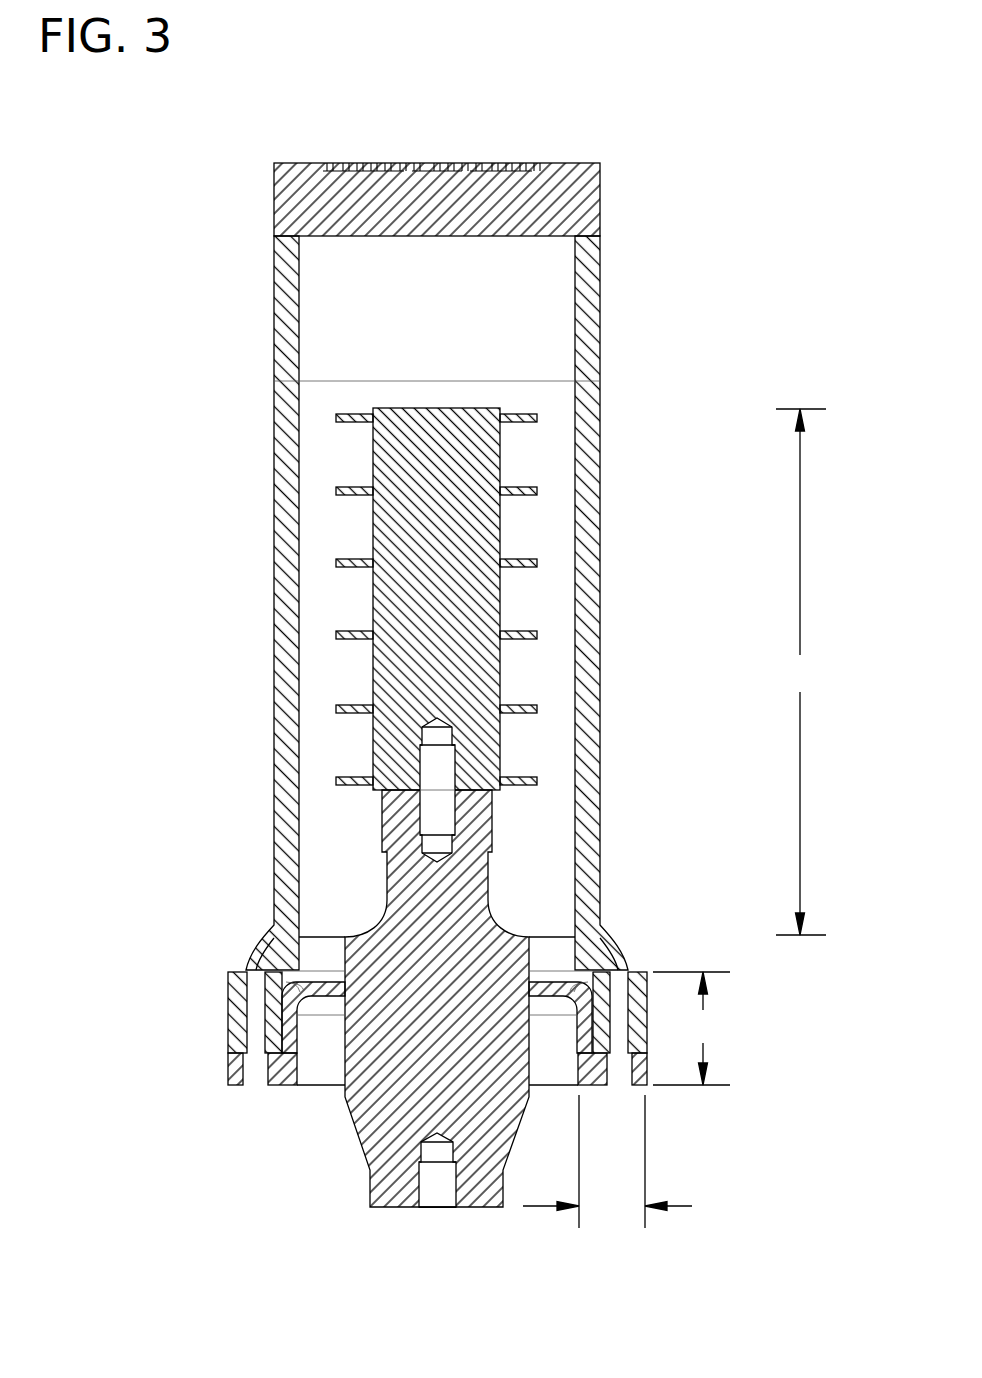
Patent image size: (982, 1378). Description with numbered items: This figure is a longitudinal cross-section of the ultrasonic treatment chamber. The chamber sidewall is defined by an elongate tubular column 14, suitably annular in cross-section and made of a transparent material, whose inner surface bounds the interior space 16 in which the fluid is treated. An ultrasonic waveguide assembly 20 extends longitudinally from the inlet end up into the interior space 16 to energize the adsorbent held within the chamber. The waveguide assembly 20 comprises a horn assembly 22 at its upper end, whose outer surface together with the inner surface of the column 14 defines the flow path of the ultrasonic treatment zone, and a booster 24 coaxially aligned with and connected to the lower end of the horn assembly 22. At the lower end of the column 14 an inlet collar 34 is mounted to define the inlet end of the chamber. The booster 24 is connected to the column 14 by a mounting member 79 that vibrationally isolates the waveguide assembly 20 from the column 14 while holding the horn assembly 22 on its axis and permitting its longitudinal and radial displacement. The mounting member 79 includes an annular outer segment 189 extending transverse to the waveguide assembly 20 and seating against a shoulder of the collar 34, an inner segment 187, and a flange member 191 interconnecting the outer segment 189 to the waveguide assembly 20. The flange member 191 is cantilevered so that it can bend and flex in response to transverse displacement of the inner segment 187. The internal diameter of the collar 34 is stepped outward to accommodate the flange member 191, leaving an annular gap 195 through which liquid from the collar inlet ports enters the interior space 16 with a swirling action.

The column 14 is at (600, 523).
The interior space 16 is at (519, 453).
The ultrasonic waveguide assembly 20 is at (801, 672).
The horn assembly 22 is at (346, 741).
The booster 24 is at (375, 1145).
The inlet collar 34 is at (640, 934).
The mounting member 79 is at (691, 1028).
The inner segment 187 is at (580, 1053).
The annular outer segment 189 is at (607, 1161).
The flange member 191 is at (612, 968).
The annular gap 195 is at (280, 985).